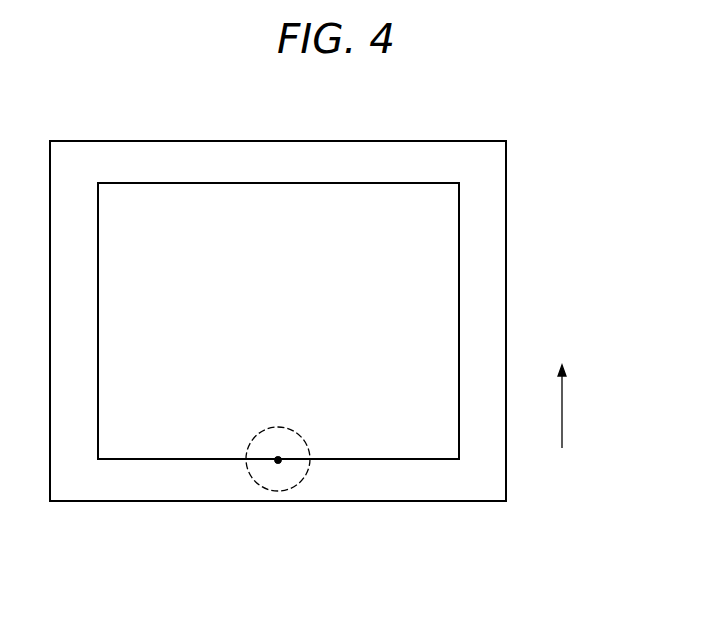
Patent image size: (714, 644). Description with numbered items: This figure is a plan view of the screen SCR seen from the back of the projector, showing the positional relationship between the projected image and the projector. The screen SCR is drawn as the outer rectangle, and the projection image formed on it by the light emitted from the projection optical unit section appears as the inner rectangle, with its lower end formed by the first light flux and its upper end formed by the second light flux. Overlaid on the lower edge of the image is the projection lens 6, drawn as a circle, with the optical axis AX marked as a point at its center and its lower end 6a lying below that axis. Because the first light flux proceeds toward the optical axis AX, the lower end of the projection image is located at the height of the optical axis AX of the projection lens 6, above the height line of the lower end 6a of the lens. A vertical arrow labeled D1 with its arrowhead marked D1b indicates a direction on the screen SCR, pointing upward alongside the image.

The screen SCR is at (485, 162).
The projection lens 6 is at (309, 468).
The lower end of the projection lens 6a is at (278, 490).
The optical axis AX is at (278, 460).
The first direction D1 is at (563, 402).
The first direction sense D1b is at (564, 365).